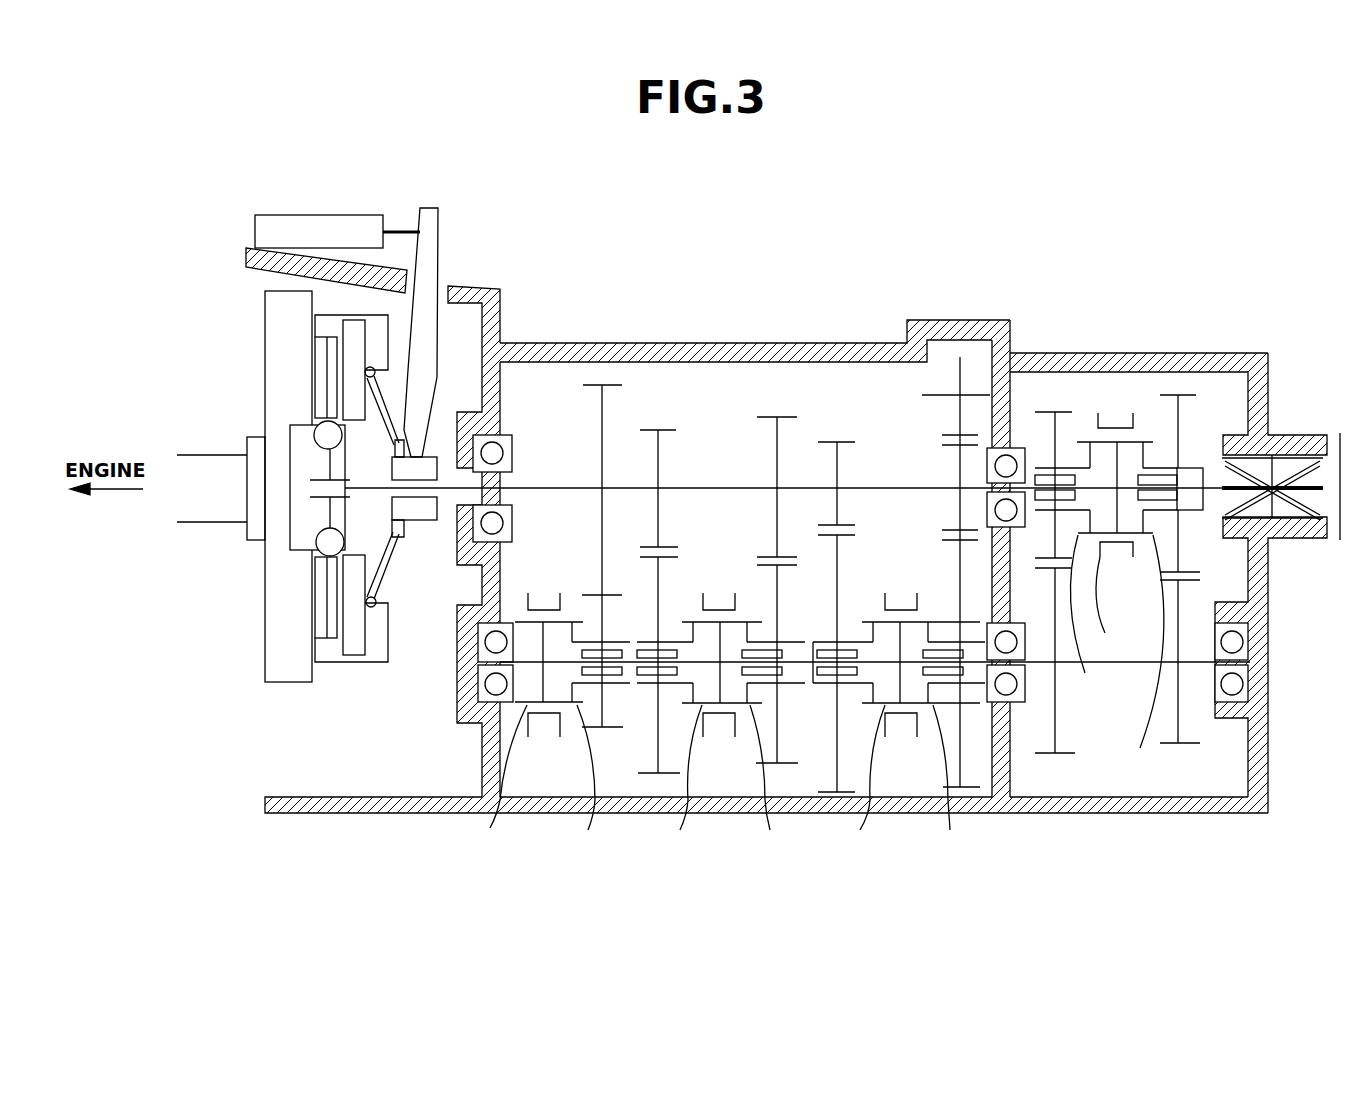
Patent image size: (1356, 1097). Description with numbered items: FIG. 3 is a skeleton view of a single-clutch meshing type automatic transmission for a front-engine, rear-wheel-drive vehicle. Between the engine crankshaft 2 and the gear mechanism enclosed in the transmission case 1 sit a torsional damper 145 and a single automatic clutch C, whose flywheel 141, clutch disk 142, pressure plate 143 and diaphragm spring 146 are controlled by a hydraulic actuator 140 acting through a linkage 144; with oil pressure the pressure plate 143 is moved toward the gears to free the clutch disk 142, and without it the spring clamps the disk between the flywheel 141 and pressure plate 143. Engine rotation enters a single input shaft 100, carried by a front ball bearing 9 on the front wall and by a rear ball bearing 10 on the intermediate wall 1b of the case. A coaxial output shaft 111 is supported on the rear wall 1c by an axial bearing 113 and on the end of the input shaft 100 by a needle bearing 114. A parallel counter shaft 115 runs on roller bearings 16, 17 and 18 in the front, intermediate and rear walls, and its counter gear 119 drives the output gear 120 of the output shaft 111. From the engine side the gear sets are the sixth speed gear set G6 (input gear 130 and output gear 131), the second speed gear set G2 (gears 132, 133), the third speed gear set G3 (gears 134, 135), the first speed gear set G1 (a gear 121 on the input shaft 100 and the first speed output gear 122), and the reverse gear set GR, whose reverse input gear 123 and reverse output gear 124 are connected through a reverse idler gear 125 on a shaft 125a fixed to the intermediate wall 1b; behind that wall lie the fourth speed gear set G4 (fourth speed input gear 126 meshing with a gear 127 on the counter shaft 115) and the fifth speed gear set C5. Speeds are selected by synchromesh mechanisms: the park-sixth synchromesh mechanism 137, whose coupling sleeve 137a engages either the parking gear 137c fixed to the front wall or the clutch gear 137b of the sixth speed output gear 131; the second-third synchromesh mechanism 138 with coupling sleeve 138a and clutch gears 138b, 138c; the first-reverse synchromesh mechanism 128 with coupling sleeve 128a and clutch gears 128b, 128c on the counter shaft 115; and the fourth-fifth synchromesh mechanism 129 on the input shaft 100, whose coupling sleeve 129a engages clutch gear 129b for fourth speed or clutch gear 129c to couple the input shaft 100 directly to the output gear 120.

The transmission case 1 is at (830, 343).
The intermediate radial wall 1b is at (495, 395).
The rear radial wall 1c is at (1260, 382).
The crankshaft 2 is at (213, 455).
The front ball bearing 9 is at (497, 450).
The rear ball bearing 10 is at (1008, 578).
The roller bearing 16 is at (490, 688).
The roller bearing 17 is at (1020, 690).
The roller bearing 18 is at (1237, 680).
The input shaft 100 is at (690, 484).
The output shaft 111 is at (1326, 490).
The axial bearing 113 is at (1300, 438).
The needle bearing 114 is at (1163, 500).
The counter shaft 115 is at (1138, 675).
The counter gear 119 is at (1180, 717).
The output gear 120 is at (1180, 447).
The first speed gear 121 is at (840, 470).
The first speed output gear 122 is at (845, 565).
The reverse input gear 123 is at (960, 470).
The reverse output gear 124 is at (958, 590).
The reverse idler gear 125 is at (962, 398).
The shaft 125a is at (942, 390).
The fourth speed input gear 126 is at (1057, 437).
The gear 127 is at (1057, 723).
The first-reverse synchromesh mechanism 128 is at (912, 745).
The coupling sleeve 128a is at (905, 738).
The clutch gear 128b is at (847, 779).
The clutch gear 128c is at (942, 784).
The fourth-fifth synchromesh mechanism 129 is at (1122, 556).
The coupling sleeve 129a is at (1110, 609).
The clutch gear 129b is at (1148, 663).
The clutch gear 129c is at (1142, 754).
The sixth speed input gear 130 is at (602, 472).
The sixth speed output gear 131 is at (600, 615).
The second speed input gear 132 is at (658, 513).
The second speed output gear 133 is at (667, 577).
The third speed input gear 134 is at (777, 465).
The third speed output gear 135 is at (775, 590).
The park-sixth synchromesh mechanism 137 is at (557, 745).
The coupling sleeve 137a is at (548, 738).
The clutch gear 137b is at (587, 784).
The parking gear 137c is at (489, 780).
The second-third synchromesh mechanism 138 is at (730, 745).
The coupling sleeve 138a is at (722, 738).
The clutch gear 138b is at (668, 779).
The clutch gear 138c is at (762, 784).
The actuator 140 is at (300, 215).
The flywheel 141 is at (265, 313).
The clutch disk 142 is at (315, 368).
The pressure plate 143 is at (365, 333).
The linkage 144 is at (438, 212).
The torsional damper 145 is at (320, 428).
The diaphragm spring 146 is at (378, 400).
The automatic clutch C is at (306, 600).
The fifth speed gear train C5 is at (1190, 390).
The first speed gear set G1 is at (841, 410).
The second speed gear set G2 is at (655, 420).
The third speed gear set G3 is at (780, 390).
The fourth speed gear set G4 is at (1068, 403).
The sixth speed gear set G6 is at (605, 380).
The reverse gear set GR is at (960, 350).